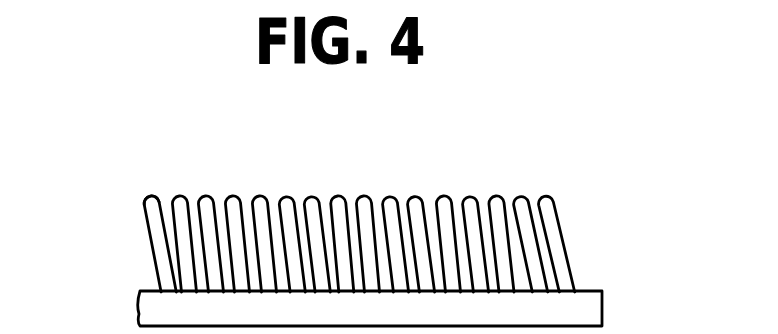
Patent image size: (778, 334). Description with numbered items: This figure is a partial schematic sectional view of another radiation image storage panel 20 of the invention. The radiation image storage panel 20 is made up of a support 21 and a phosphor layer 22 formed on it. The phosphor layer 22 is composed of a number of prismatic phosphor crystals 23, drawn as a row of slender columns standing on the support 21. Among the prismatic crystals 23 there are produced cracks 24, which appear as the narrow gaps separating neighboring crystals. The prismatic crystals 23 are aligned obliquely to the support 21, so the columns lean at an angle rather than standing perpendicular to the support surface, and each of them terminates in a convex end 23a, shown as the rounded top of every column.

The radiation image storage panel 20 is at (560, 176).
The support 21 is at (604, 305).
The phosphor layer 22 is at (613, 190).
The prismatic phosphor crystal 23 is at (153, 246).
The convex end 23a is at (152, 202).
The crack 24 is at (163, 207).